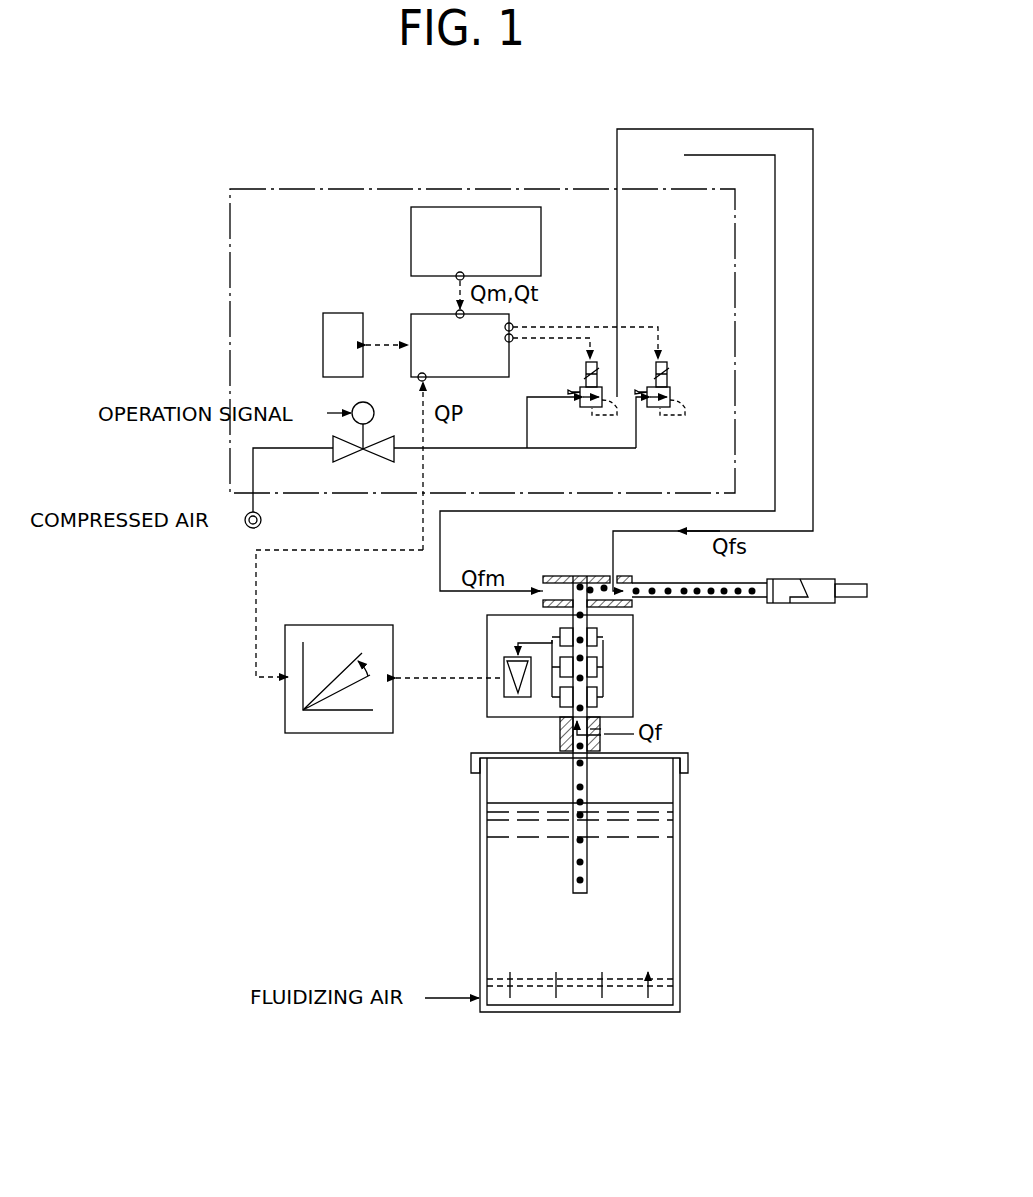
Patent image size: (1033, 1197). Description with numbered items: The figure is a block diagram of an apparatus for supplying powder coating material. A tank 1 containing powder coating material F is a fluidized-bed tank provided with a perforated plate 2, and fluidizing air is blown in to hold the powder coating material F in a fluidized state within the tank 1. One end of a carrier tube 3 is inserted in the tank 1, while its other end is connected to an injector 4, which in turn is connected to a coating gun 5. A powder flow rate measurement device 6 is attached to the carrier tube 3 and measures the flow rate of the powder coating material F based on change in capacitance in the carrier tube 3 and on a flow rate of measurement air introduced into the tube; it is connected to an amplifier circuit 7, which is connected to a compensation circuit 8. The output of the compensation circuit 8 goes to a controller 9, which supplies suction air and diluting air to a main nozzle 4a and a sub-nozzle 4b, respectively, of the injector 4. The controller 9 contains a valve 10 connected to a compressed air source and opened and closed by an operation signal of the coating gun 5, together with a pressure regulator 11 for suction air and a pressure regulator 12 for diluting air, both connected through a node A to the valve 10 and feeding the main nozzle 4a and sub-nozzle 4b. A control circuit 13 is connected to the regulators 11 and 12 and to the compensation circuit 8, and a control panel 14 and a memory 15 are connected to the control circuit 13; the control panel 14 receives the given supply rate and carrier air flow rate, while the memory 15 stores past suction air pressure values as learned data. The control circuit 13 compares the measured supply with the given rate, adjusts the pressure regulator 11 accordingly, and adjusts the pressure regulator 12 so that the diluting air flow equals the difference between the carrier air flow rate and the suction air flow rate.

The tank 1 is at (480, 866).
The perforated plate 2 is at (624, 975).
The carrier tube 3 is at (573, 786).
The injector 4 is at (556, 576).
The main nozzle 4a is at (543, 600).
The sub-nozzle 4b is at (607, 560).
The coating gun 5 is at (804, 603).
The powder flow rate measurement device 6 is at (598, 628).
The amplifier circuit 7 is at (504, 690).
The compensation circuit 8 is at (343, 625).
The controller 9 is at (228, 249).
The valve 10 is at (371, 463).
The pressure regulator for suction air 11 is at (655, 410).
The pressure regulator for diluting air 12 is at (583, 410).
The control circuit 13 is at (411, 320).
The control panel 14 is at (411, 237).
The memory 15 is at (323, 333).
The node A is at (527, 449).
The powder coating material F is at (588, 858).